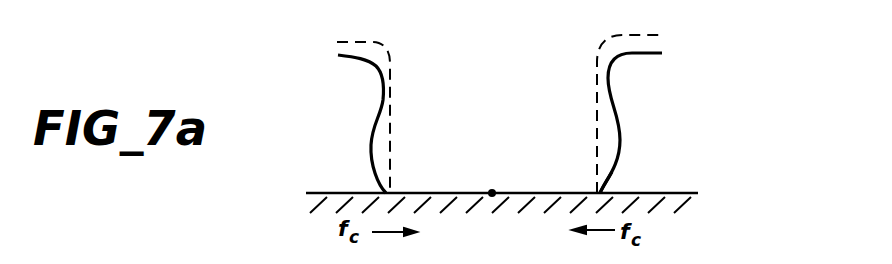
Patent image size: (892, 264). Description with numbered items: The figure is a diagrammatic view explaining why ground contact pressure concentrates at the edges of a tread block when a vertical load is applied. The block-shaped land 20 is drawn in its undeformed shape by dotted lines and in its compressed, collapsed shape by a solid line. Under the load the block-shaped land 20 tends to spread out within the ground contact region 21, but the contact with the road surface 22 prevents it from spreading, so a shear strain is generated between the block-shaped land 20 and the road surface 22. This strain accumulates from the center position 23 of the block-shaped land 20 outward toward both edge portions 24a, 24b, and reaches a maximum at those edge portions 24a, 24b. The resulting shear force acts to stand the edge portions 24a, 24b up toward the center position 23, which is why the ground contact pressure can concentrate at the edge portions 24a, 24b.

The block-shaped land 20 is at (568, 127).
The ground contact region 21 is at (509, 198).
The road surface 22 is at (678, 193).
The center position 23 is at (494, 192).
The edge portion 24a is at (386, 193).
The edge portion 24b is at (602, 192).